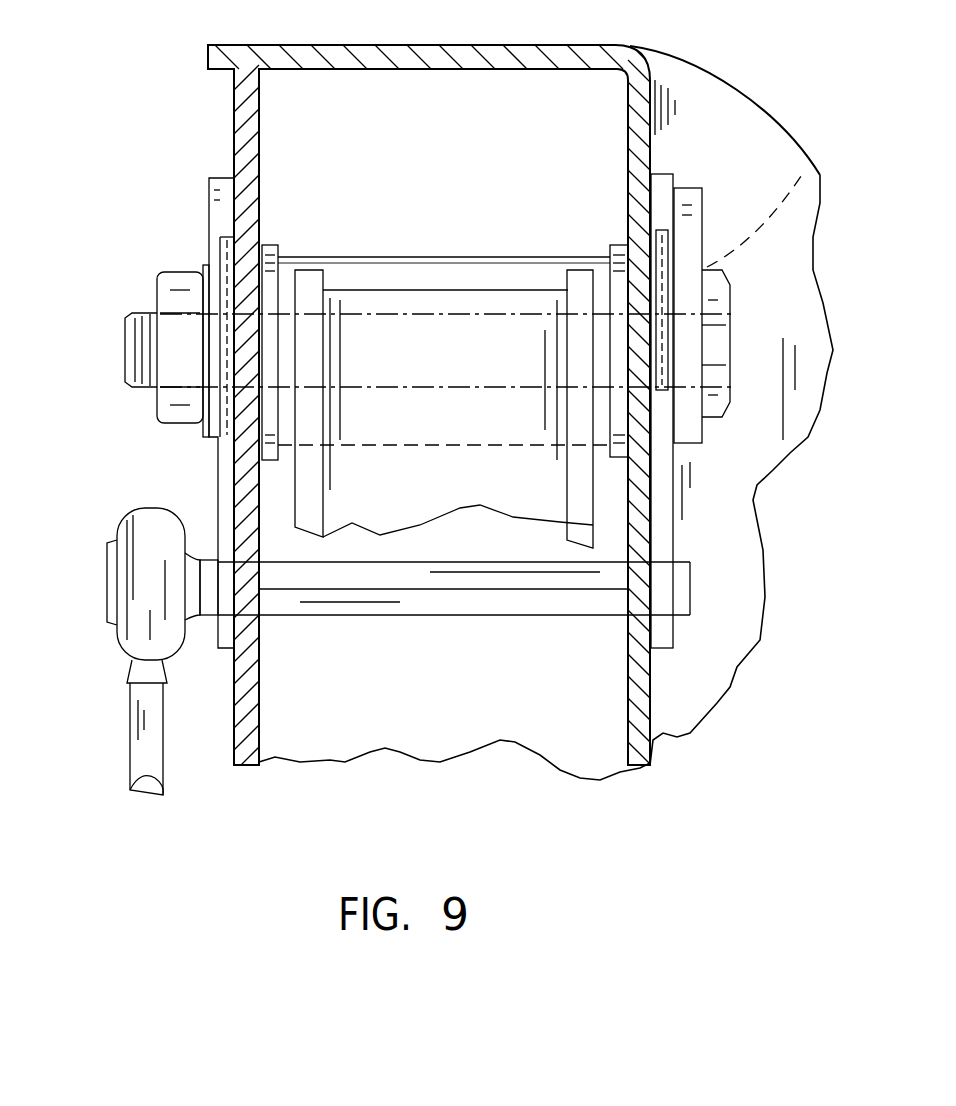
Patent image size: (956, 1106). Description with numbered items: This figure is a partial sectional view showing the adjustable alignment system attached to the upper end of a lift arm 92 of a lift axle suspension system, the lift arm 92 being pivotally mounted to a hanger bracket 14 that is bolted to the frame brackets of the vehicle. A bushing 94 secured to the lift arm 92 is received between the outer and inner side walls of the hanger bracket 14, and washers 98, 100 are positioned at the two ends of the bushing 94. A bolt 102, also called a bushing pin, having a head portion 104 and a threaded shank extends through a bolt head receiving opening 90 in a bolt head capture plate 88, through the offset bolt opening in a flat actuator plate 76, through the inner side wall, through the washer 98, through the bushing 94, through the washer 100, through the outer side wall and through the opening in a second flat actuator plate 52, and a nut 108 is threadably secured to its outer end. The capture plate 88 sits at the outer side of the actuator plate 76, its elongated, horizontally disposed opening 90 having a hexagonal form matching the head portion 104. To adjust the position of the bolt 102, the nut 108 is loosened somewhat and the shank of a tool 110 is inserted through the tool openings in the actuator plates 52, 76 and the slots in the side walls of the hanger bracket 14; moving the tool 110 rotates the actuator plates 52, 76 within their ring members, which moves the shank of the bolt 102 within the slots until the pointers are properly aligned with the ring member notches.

The hanger bracket 14 is at (688, 505).
The actuator plate 52 is at (213, 481).
The actuator plate 76 is at (668, 533).
The bolt head capture plate 88 is at (690, 185).
The bolt head receiving opening 90 is at (798, 180).
The lift arm 92 is at (460, 508).
The bushing 94 is at (470, 275).
The washer 98 is at (262, 245).
The washer 100 is at (612, 245).
The bolt 102 is at (121, 340).
The head portion 104 is at (727, 343).
The nut 108 is at (180, 282).
The tool 110 is at (125, 690).